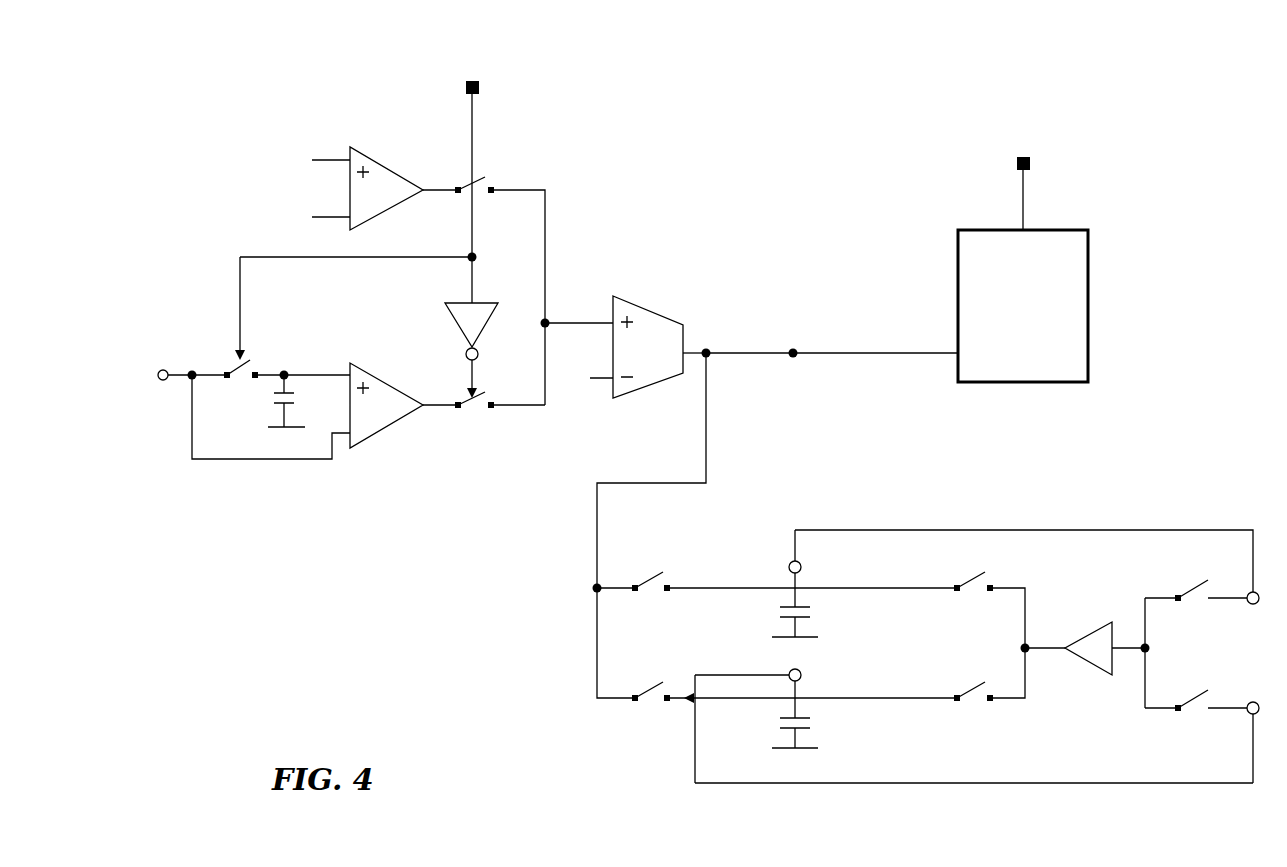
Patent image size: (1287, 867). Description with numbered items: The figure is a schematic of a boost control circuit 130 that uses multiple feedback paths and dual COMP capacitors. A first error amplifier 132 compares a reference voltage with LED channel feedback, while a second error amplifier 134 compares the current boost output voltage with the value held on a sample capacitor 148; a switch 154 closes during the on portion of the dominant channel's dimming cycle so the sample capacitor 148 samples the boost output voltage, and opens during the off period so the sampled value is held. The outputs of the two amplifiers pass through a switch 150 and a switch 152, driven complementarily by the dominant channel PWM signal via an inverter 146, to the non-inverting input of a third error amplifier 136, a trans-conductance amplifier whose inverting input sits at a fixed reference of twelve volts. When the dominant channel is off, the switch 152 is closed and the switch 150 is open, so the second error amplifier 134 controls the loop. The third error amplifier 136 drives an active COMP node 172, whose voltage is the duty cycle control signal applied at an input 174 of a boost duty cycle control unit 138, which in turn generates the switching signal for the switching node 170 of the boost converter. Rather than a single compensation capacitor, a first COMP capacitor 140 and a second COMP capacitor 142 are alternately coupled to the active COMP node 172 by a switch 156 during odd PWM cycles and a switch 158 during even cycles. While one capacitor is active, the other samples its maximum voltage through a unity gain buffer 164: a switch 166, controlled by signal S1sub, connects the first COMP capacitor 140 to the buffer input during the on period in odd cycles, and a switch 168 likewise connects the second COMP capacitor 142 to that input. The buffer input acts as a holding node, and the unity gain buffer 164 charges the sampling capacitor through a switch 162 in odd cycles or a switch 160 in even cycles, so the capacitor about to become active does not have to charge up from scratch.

The boost control circuit 130 is at (287, 45).
The first error amplifier 132 is at (397, 174).
The second error amplifier 134 is at (392, 424).
The third error amplifier 136 is at (648, 310).
The boost duty cycle control unit 138 is at (1008, 371).
The first COMP capacitor 140 is at (780, 608).
The second COMP capacitor 142 is at (780, 718).
The inverter 146 is at (455, 302).
The sample capacitor 148 is at (297, 400).
The switch 150 is at (481, 178).
The switch 152 is at (470, 410).
The switch 154 is at (240, 382).
The switch 156 is at (652, 576).
The switch 158 is at (652, 686).
The switch 160 is at (985, 580).
The switch 162 is at (968, 691).
The unity gain buffer 164 is at (1095, 630).
The switch 166 is at (1195, 585).
The switch 168 is at (1194, 706).
The switching node 170 is at (1020, 200).
The active COMP node 172 is at (793, 358).
The input of boost duty cycle control unit 174 is at (937, 352).